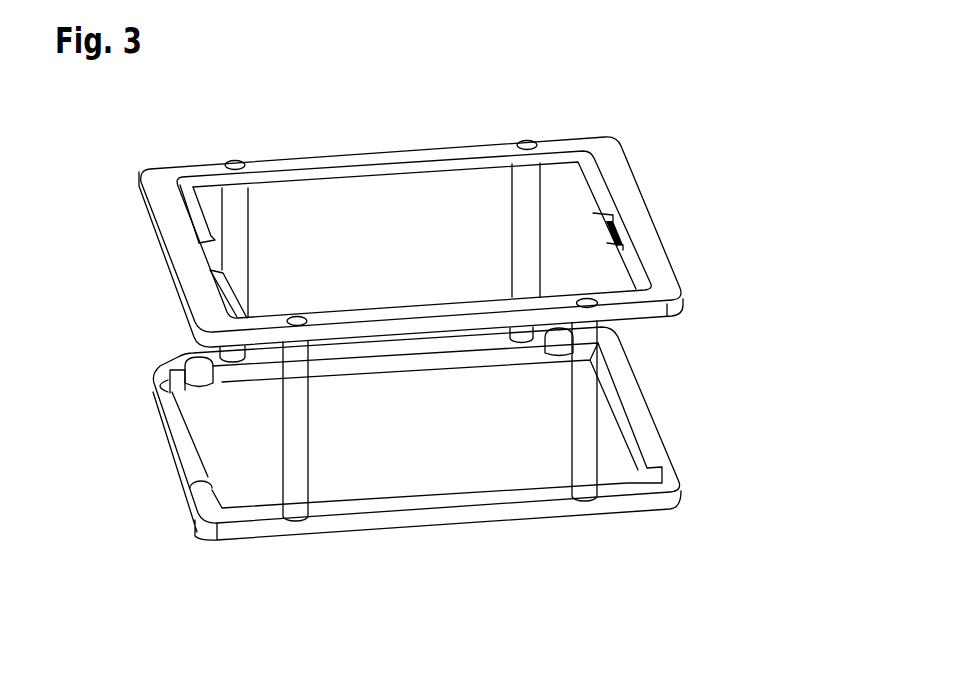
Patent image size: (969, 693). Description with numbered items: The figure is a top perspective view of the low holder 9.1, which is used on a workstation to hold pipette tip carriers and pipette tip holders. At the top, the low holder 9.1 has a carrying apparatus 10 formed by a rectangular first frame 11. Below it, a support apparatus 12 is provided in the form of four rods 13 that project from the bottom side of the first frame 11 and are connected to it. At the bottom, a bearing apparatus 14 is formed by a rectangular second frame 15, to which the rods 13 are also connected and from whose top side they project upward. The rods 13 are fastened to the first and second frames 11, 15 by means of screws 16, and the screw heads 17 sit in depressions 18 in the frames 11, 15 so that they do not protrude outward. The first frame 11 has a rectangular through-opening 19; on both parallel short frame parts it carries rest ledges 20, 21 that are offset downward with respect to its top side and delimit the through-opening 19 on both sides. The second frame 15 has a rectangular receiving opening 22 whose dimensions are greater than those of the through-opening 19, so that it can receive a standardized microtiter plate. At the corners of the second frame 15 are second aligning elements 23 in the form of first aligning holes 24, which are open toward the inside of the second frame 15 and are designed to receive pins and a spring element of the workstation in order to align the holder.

The low holder 9.1 is at (672, 233).
The carrying apparatus 10 is at (409, 191).
The first frame 11 is at (613, 162).
The support apparatus 12 is at (493, 342).
The rods 13 is at (590, 352).
The bearing apparatus 14 is at (443, 455).
The second frame 15 is at (643, 428).
The screws 16 is at (414, 192).
The screw heads 17 is at (530, 140).
The depressions 18 is at (520, 142).
The through-opening 19 is at (356, 194).
The rest ledge 20 is at (200, 228).
The rest ledge 21 is at (600, 195).
The receiving opening 22 is at (403, 472).
The second aligning elements 23 is at (318, 434).
The first aligning holes 24 is at (193, 482).